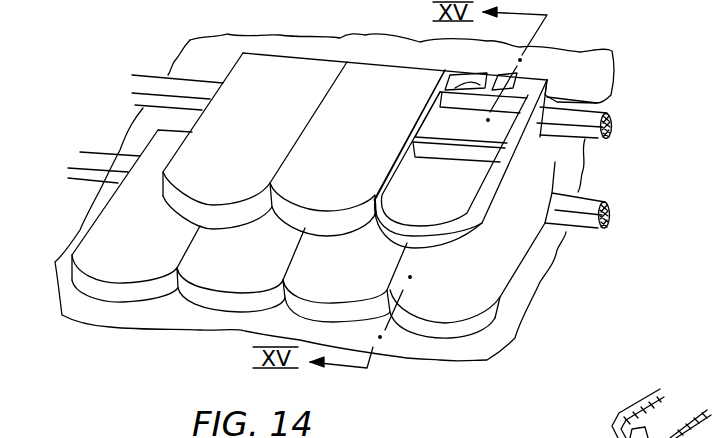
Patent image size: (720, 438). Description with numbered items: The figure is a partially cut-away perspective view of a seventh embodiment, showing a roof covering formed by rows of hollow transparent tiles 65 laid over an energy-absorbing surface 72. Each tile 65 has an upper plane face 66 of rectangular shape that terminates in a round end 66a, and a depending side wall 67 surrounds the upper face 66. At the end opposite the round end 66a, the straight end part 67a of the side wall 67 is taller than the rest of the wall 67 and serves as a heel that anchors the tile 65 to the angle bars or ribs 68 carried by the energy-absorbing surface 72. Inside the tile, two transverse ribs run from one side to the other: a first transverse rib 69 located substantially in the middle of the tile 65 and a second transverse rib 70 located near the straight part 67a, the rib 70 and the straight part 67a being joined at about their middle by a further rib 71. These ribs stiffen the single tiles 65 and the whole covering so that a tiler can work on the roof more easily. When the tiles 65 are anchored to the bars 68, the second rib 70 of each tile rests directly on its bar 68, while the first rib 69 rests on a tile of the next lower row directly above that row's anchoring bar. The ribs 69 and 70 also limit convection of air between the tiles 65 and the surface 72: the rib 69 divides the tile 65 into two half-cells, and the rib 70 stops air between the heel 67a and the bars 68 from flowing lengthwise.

The hollow transparent tile 65 is at (205, 272).
The upper plane face 66 is at (277, 83).
The round end 66a is at (237, 175).
The depending side wall 67 is at (522, 142).
The straight end part 67a is at (548, 98).
The angle bar 68 is at (608, 128).
The first transverse rib 69 is at (437, 150).
The second transverse rib 70 is at (463, 102).
The rib 71 is at (443, 78).
The energy-absorbing surface 72 is at (541, 281).